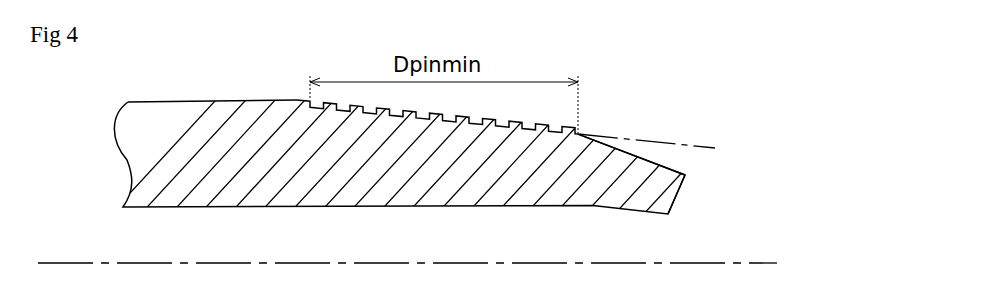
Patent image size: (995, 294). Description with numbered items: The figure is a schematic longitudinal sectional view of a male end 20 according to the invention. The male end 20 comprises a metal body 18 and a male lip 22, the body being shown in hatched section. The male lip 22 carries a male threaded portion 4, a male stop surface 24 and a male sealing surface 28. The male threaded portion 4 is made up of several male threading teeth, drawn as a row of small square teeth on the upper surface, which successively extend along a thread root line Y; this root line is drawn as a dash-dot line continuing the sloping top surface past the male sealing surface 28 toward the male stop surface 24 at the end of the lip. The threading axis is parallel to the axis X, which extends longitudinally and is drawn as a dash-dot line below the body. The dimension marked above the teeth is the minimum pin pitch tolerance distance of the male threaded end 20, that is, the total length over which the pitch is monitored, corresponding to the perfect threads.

The male threaded portion 4 is at (437, 112).
The metal body 18 is at (207, 157).
The male end 20 is at (163, 168).
The male lip 22 is at (375, 141).
The male stop surface 24 is at (678, 202).
The male sealing surface 28 is at (590, 134).
The axis X is at (723, 262).
The thread root line Y is at (688, 143).